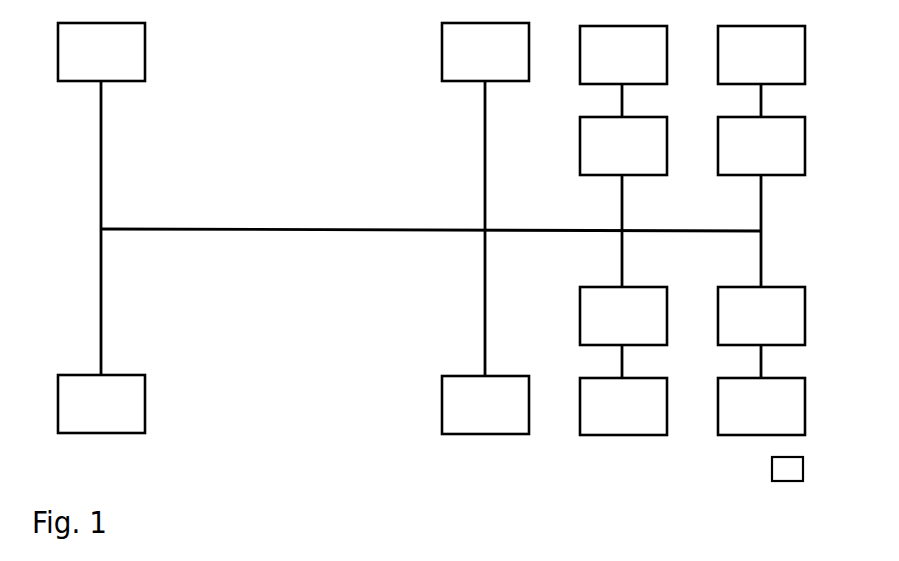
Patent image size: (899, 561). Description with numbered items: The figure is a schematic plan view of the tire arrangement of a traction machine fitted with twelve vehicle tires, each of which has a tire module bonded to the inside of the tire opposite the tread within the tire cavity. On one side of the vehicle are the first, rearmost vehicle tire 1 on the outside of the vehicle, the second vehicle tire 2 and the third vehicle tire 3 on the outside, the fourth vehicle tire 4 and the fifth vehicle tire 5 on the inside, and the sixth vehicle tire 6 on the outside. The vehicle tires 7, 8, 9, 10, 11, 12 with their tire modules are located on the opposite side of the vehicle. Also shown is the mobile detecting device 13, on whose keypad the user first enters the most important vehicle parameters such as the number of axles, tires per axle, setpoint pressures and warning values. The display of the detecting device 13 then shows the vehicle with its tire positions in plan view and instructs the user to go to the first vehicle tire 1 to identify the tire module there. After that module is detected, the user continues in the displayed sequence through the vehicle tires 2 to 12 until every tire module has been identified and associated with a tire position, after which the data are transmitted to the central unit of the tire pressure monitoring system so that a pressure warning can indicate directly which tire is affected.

The first vehicle tire 1 is at (761, 406).
The second vehicle tire 2 is at (623, 406).
The third vehicle tire 3 is at (485, 405).
The fourth vehicle tire 4 is at (623, 316).
The fifth vehicle tire 5 is at (761, 316).
The sixth vehicle tire 6 is at (101, 404).
The vehicle tire 7 is at (101, 52).
The vehicle tire 8 is at (485, 52).
The vehicle tire 9 is at (623, 55).
The vehicle tire 10 is at (761, 55).
The vehicle tire 11 is at (761, 146).
The vehicle tire 12 is at (623, 146).
The mobile detecting device 13 is at (793, 481).